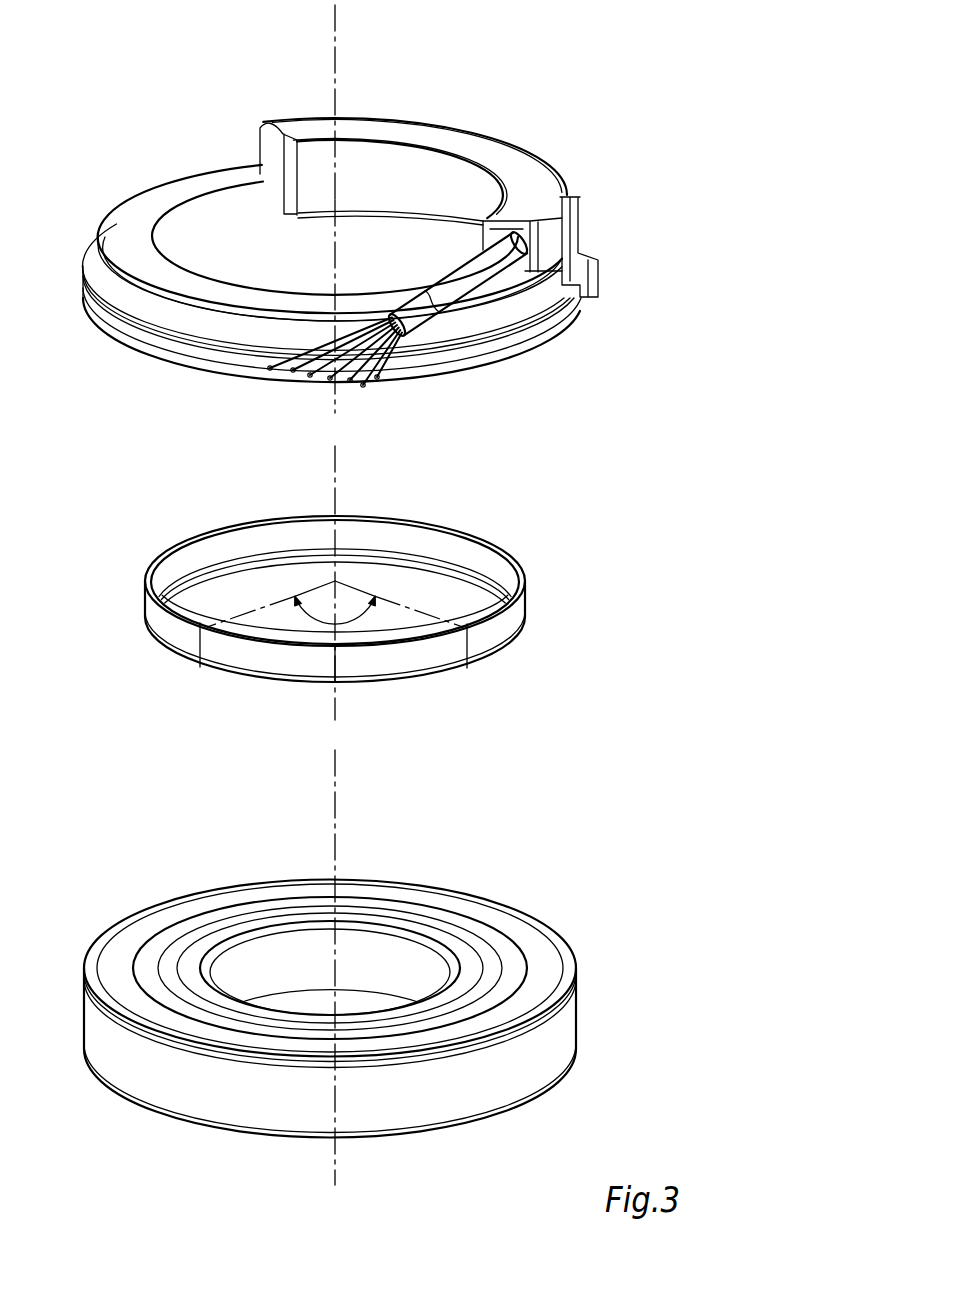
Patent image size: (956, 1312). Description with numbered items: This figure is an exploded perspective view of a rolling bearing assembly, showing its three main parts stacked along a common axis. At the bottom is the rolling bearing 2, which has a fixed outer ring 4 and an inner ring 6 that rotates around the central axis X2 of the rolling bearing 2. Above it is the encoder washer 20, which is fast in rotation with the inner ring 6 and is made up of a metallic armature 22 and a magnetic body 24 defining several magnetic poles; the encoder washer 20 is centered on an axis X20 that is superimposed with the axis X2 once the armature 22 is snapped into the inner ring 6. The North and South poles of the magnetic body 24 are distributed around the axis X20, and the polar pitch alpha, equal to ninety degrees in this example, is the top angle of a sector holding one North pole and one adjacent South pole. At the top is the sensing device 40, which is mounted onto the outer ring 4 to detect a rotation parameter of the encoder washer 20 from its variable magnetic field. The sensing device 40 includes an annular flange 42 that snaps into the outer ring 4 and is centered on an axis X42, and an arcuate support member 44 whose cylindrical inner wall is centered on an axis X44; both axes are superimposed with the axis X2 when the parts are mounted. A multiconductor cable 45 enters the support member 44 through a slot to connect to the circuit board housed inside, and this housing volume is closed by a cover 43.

The rolling bearing 2 is at (665, 988).
The outer ring 4 is at (540, 1053).
The inner ring 6 is at (459, 973).
The encoder washer 20 is at (617, 562).
The metallic armature 22 is at (505, 550).
The magnetic body 24 is at (518, 633).
The sensing device 40 is at (587, 327).
The annular flange 42 is at (137, 233).
The cover 43 is at (414, 132).
The support member 44 is at (461, 194).
The multiconductor cable 45 is at (457, 277).
The axis of support member X44 is at (353, 102).
The axis of flange X42 is at (332, 321).
The axis of encoder washer X20 is at (333, 597).
The central axis of rolling bearing X2 is at (332, 982).